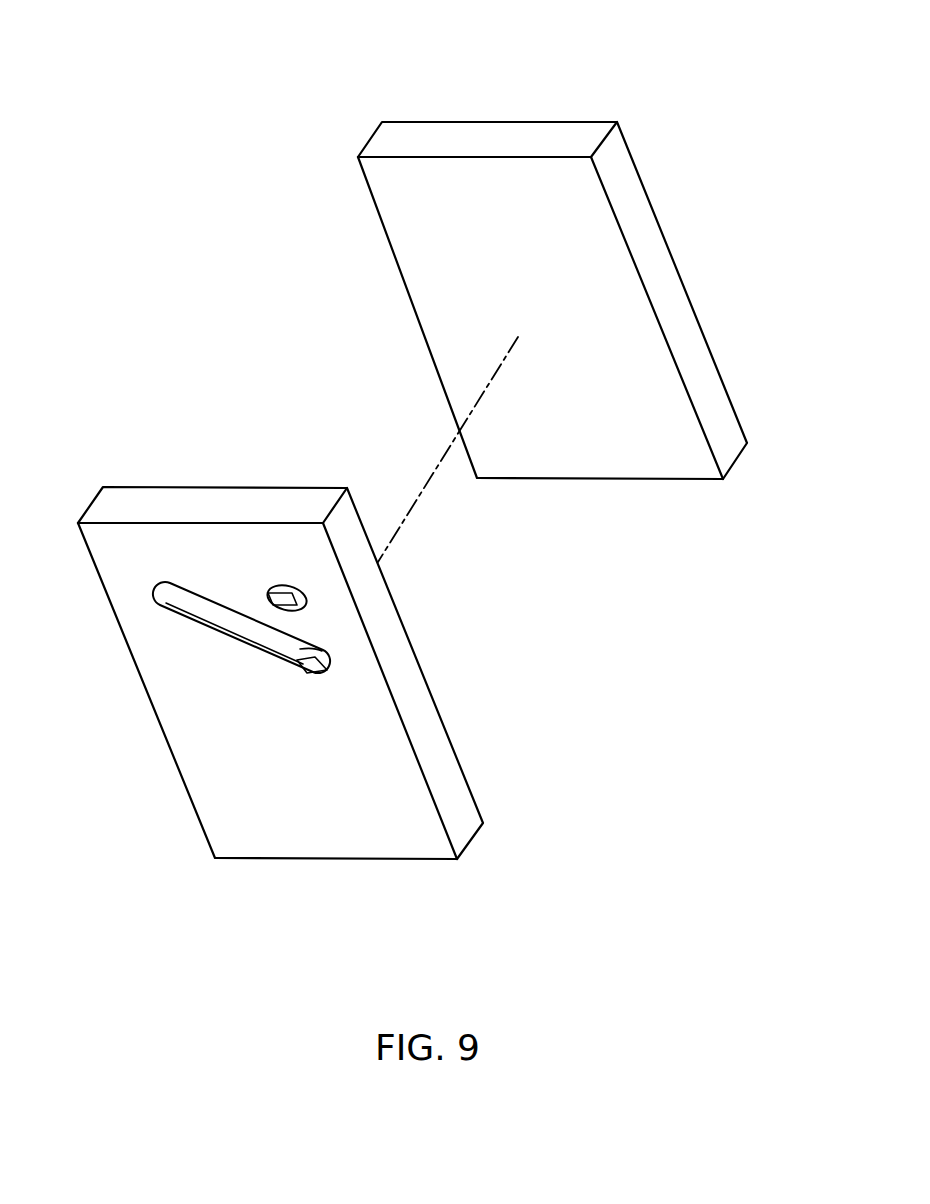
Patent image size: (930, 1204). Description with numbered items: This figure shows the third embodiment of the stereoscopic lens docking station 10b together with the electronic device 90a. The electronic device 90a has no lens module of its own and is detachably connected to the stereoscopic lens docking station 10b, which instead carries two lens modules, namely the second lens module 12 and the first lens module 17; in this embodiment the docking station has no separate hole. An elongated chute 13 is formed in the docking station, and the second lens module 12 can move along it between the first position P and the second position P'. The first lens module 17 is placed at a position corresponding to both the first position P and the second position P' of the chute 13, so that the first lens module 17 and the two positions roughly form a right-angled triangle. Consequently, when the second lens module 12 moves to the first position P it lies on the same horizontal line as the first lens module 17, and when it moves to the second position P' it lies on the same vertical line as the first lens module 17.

The electronic device 90a is at (500, 121).
The stereoscopic lens docking station 10b is at (199, 892).
The chute 13 is at (188, 600).
The second lens module 12 is at (318, 675).
The first lens module 17 is at (280, 583).
The first position P is at (91, 615).
The second position P' is at (432, 672).